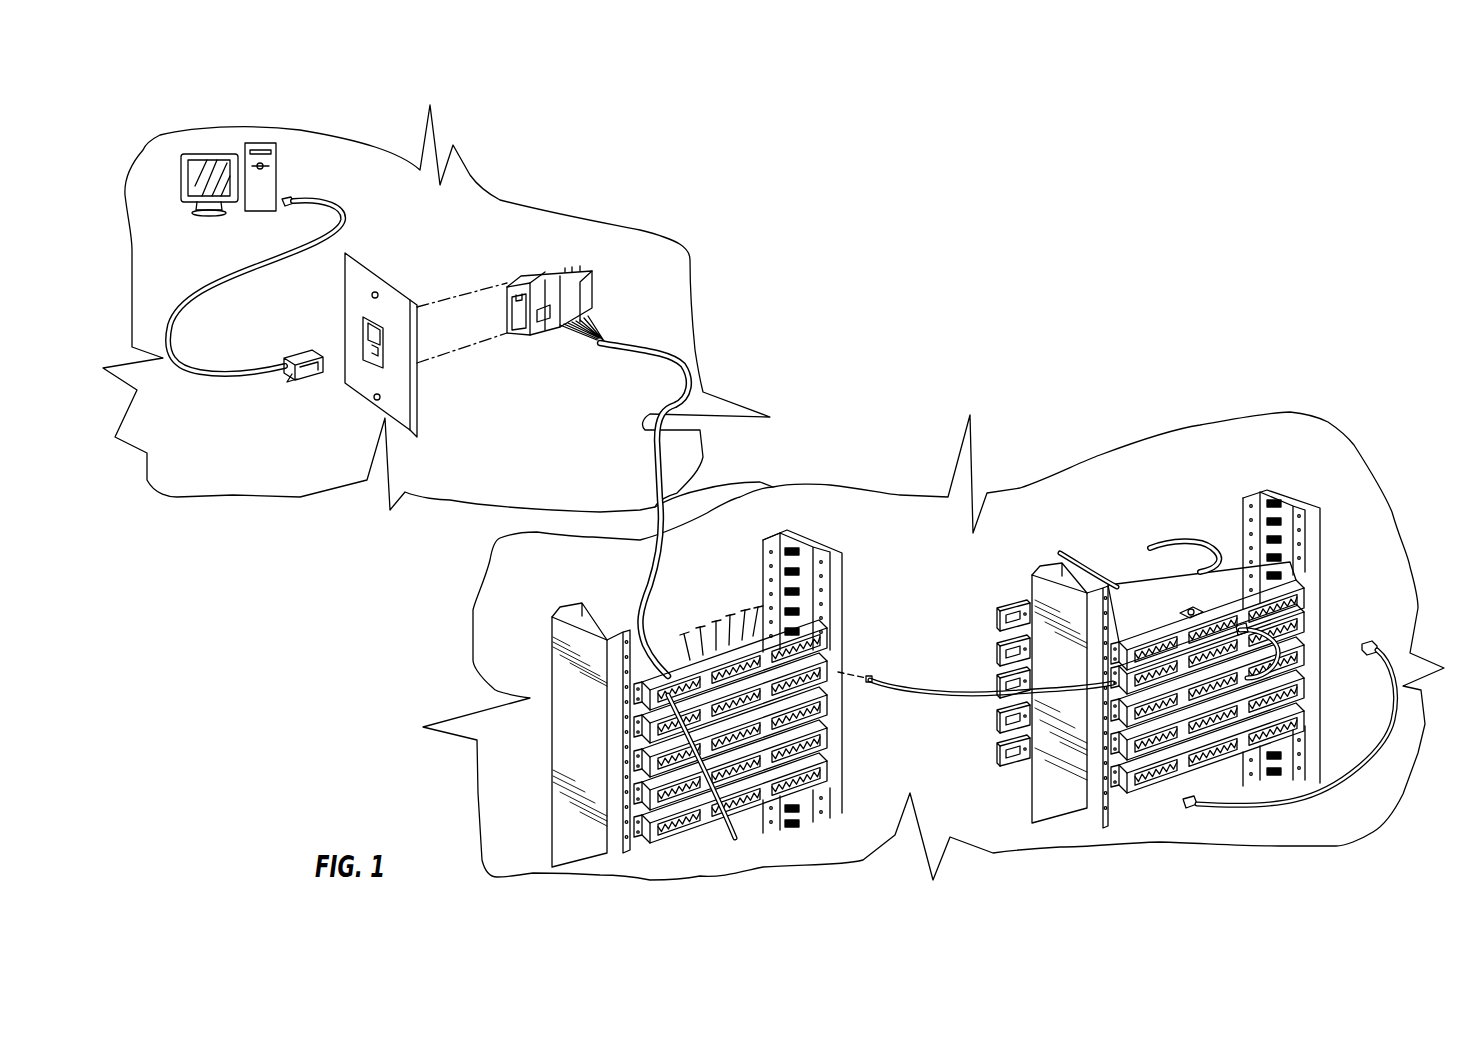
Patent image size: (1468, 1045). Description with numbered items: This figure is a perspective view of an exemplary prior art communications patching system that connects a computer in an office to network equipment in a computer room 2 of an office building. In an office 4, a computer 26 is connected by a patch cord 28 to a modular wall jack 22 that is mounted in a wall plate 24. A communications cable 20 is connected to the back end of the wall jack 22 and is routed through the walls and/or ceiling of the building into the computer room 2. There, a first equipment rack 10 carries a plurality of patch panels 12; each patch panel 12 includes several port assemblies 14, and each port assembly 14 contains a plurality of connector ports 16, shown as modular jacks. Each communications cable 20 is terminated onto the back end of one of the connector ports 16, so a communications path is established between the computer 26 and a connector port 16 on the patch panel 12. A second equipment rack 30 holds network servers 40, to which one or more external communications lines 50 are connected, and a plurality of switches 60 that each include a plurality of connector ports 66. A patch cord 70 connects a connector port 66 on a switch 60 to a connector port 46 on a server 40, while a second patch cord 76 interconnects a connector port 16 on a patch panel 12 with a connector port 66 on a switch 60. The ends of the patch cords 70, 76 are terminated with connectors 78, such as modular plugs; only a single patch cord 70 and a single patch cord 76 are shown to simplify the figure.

The computer room 2 is at (470, 850).
The office 4 is at (652, 135).
The first equipment rack 10 is at (640, 680).
The patch panel 12 is at (832, 672).
The port assembly 14 is at (803, 632).
The connector port 16 is at (709, 781).
The communications cable 20 is at (633, 356).
The modular wall jack 22 is at (540, 277).
The wall plate 24 is at (420, 414).
The computer 26 is at (278, 162).
The patch cord 28 is at (174, 315).
The second equipment rack 30 is at (1319, 495).
The network server 40 is at (1127, 792).
The connector port 46 is at (1131, 808).
The external communications line 50 is at (1082, 548).
The switch 60 is at (1287, 638).
The connector port 66 is at (1160, 648).
The patch cord 70 is at (1376, 743).
The patch cord 76 is at (914, 696).
The connector 78 is at (872, 678).